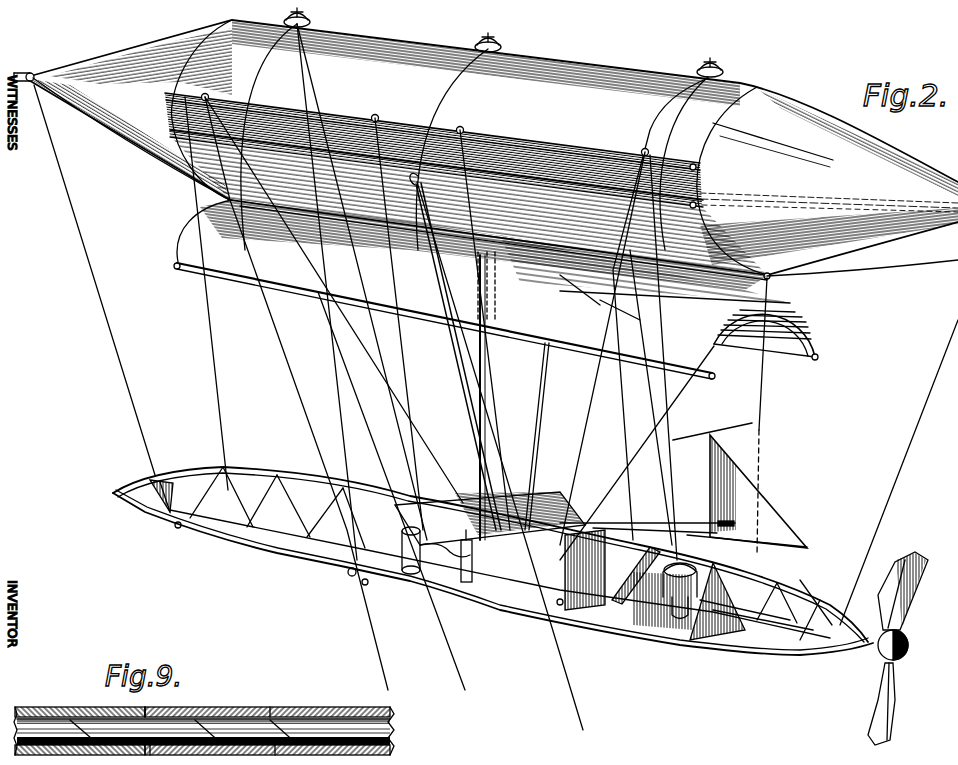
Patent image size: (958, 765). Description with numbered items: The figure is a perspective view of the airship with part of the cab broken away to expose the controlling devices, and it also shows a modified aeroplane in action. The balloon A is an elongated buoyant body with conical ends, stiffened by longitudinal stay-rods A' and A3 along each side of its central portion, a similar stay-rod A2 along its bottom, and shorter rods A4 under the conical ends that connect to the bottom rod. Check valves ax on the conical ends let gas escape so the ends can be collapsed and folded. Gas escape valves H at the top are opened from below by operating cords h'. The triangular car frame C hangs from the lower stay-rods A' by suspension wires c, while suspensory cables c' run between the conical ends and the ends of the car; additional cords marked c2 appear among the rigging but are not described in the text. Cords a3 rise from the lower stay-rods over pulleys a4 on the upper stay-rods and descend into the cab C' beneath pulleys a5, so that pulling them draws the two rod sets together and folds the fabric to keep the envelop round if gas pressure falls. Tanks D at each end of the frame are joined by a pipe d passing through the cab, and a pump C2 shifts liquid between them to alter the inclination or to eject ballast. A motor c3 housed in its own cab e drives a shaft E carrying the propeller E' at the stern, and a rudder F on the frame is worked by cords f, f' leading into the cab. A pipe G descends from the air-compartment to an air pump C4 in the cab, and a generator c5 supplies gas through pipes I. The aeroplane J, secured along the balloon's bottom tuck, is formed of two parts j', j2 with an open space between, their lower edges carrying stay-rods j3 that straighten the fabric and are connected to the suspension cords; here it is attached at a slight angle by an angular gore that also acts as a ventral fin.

The balloon A is at (492, 141).
The stay-rods A' is at (452, 169).
The stay-rod A2 is at (622, 309).
The stay-rods A3 is at (699, 166).
The shorter rods A4 is at (872, 268).
The check valves ax is at (40, 70).
The cords a3 is at (304, 404).
The pulleys a4 is at (222, 90).
The pulleys a5 is at (362, 586).
The frame C is at (493, 561).
The cab C' is at (441, 547).
The pump C2 is at (436, 550).
The air pump C4 is at (476, 590).
The suspension wires or ropes c is at (490, 292).
The suspensory wires or cables c' is at (496, 355).
The longitudinal cord c2 is at (128, 160).
The motor c3 is at (636, 575).
The generator c5 is at (585, 570).
The tanks D is at (130, 510).
The pipe d is at (172, 528).
The shaft E is at (872, 648).
The propeller E' is at (905, 633).
The cab e is at (722, 594).
The rudder F is at (758, 490).
The operating cord f is at (647, 513).
The operating cord f' is at (655, 516).
The pipe G is at (488, 408).
The gas escape valves H is at (722, 70).
The operating cords h' is at (660, 309).
The pipes I is at (456, 338).
The aeroplane J is at (812, 332).
The aeroplane part j' is at (483, 456).
The aeroplane part j2 is at (580, 300).
The stay-rods j3 is at (305, 300).